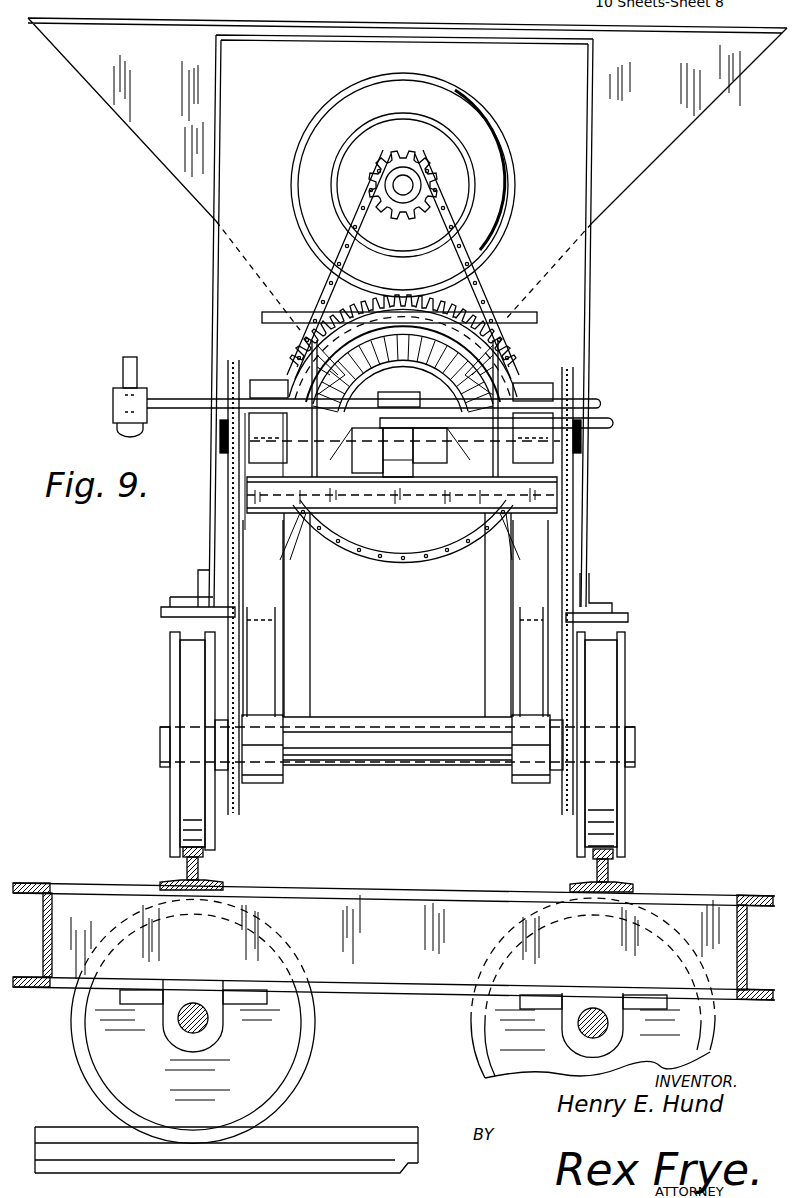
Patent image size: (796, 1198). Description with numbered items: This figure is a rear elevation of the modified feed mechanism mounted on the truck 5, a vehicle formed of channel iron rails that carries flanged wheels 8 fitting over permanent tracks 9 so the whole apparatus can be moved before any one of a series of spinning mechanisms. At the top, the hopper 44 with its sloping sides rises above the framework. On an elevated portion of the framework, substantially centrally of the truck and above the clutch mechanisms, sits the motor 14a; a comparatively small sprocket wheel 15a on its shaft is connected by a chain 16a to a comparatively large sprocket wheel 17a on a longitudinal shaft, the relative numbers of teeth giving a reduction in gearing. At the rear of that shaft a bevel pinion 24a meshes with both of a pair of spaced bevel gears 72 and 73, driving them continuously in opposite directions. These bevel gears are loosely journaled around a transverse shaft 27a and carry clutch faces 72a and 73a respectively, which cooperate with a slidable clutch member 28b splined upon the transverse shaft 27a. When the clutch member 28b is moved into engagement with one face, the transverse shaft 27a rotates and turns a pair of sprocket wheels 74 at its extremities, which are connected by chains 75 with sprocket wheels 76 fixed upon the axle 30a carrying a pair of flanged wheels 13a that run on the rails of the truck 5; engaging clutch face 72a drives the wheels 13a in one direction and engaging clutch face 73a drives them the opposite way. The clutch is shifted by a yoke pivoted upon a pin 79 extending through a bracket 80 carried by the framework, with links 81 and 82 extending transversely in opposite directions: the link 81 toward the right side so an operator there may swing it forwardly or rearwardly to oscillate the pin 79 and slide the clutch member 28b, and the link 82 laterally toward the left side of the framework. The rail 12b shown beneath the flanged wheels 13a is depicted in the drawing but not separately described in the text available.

The hopper 44 is at (695, 100).
The motor 14a is at (485, 153).
The small sprocket wheel 15a is at (413, 206).
The chain 16a is at (480, 272).
The large sprocket wheel 17a is at (510, 333).
The bevel gear 72 is at (460, 385).
The bevel pinion 24a is at (432, 388).
The pin 79 is at (410, 396).
The bracket 80 is at (390, 463).
The sprocket wheels 74 is at (573, 405).
The link 82 is at (176, 398).
The link 81 is at (613, 423).
The transverse shaft 27a is at (553, 440).
The bevel gear 73 is at (312, 500).
The clutch face 73a is at (350, 497).
The slidable clutch member 28b is at (432, 500).
The clutch face 72a is at (470, 500).
The chains 75 is at (600, 545).
The sprocket wheels 76 is at (645, 707).
The axle 30a is at (440, 762).
The flanged wheels 13a is at (600, 800).
The rail 12b is at (612, 878).
The truck 5 is at (395, 898).
The flanged wheels 8 is at (305, 1052).
The permanent tracks 9 is at (342, 1143).